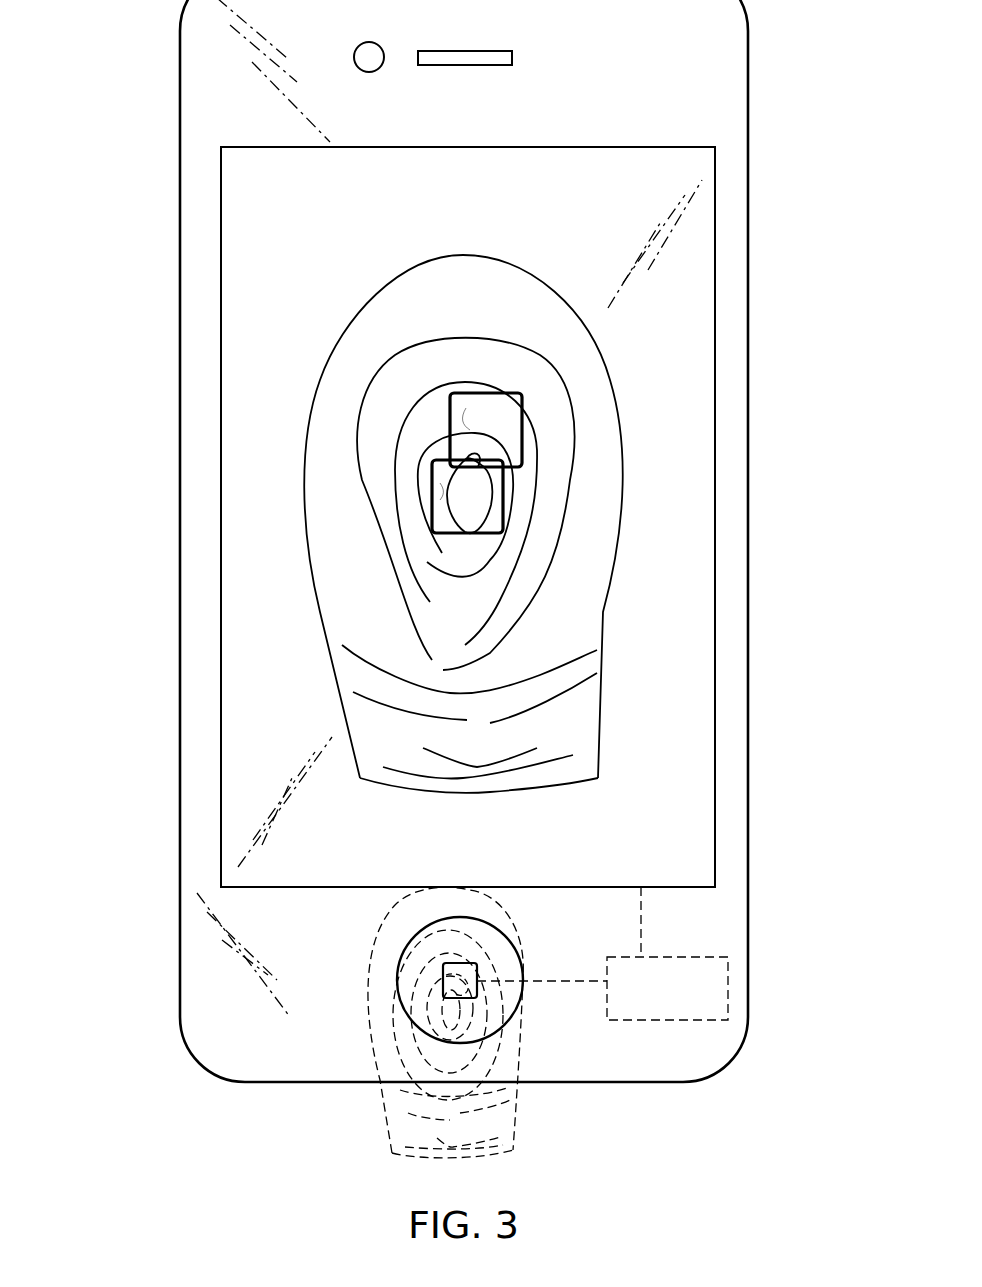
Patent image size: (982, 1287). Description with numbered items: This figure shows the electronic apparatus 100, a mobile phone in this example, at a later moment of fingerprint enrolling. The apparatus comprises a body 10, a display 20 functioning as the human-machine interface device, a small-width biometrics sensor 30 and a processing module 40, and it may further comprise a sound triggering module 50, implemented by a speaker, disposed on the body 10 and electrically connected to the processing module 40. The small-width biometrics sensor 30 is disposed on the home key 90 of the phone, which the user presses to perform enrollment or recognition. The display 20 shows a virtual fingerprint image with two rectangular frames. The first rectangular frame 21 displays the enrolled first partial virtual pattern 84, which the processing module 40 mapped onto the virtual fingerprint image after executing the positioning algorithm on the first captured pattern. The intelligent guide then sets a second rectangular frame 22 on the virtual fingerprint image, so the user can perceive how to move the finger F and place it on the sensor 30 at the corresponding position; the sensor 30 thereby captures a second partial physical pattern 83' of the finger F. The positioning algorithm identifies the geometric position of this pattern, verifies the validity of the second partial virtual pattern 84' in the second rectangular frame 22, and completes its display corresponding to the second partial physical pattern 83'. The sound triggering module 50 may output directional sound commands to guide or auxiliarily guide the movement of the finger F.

The electronic apparatus 100 is at (160, 211).
The body 10 is at (193, 495).
The display 20 is at (247, 332).
The sound triggering module 50 is at (493, 58).
The rectangular frame 21 is at (505, 498).
The second rectangular frame 22 is at (523, 435).
The first partial virtual pattern 84 is at (268, 459).
The second partial virtual pattern 84' is at (282, 404).
The small-width biometrics sensor 30 is at (442, 970).
The second partial physical pattern 83' is at (368, 1012).
The processing module 40 is at (728, 1002).
The home key 90 is at (520, 1007).
The finger F is at (388, 1125).